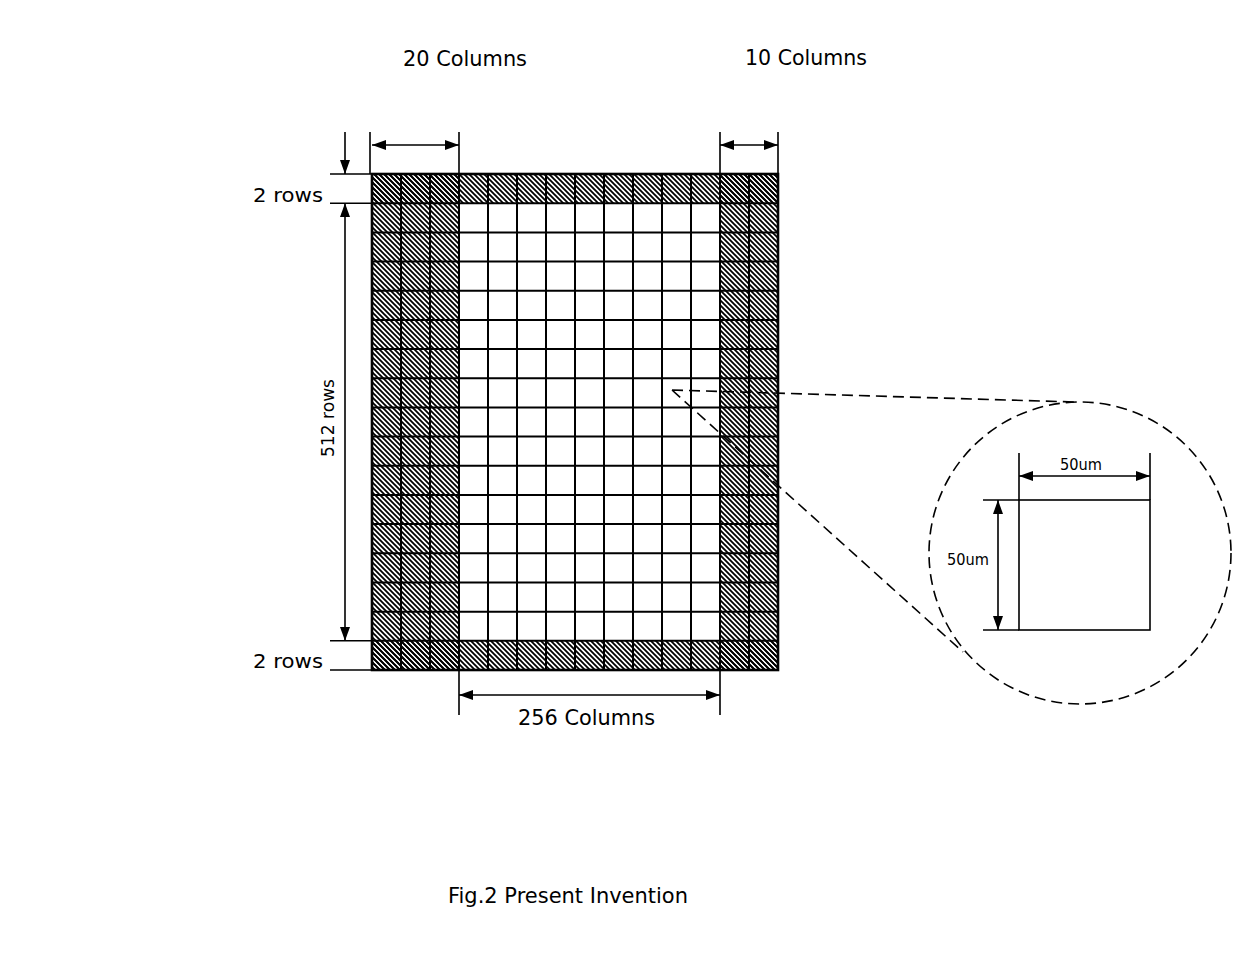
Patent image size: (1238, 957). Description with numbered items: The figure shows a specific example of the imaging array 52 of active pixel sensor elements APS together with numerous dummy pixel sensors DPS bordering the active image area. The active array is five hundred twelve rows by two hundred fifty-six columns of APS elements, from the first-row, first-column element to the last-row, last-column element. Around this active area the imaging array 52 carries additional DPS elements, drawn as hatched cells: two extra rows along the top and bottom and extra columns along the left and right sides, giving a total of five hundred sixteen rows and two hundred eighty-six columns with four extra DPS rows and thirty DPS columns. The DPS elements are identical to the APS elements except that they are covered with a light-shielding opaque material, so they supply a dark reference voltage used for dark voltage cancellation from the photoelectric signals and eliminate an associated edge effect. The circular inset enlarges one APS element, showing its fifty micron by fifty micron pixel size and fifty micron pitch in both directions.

The imaging array 52 is at (184, 123).
The dummy pixel sensor DPS is at (371, 174).
The active pixel sensor element APS is at (634, 420).